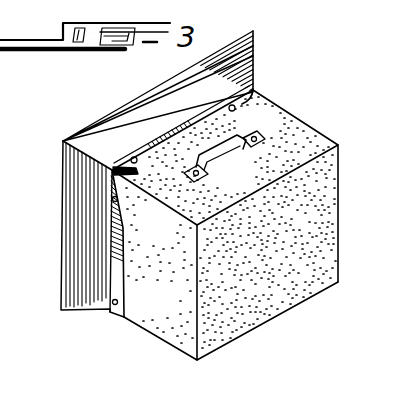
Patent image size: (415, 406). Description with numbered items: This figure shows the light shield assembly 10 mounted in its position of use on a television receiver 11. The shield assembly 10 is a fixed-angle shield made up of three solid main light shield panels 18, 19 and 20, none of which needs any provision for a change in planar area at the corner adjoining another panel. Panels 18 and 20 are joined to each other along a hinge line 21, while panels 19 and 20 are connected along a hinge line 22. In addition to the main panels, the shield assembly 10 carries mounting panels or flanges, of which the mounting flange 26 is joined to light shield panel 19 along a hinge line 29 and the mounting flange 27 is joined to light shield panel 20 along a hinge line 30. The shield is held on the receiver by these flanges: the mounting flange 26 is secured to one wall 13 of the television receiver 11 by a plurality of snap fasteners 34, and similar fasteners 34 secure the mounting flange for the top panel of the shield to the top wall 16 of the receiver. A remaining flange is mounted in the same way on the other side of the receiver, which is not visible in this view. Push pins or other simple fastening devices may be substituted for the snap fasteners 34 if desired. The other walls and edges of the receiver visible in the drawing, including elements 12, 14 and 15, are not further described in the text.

The light shield assembly 10 is at (195, 213).
The television receiver 11 is at (250, 227).
The bottom edge of box 12 is at (188, 360).
The wall 13 is at (162, 318).
The end wall edge 14 is at (340, 182).
The side wall 15 is at (272, 298).
The top wall 16 is at (251, 187).
The light shield panel 18 is at (255, 90).
The light shield panel 19 is at (73, 243).
The light shield panel 20 is at (181, 100).
The hinge line 21 is at (254, 63).
The hinge line 22 is at (78, 139).
The mounting flange 26 is at (117, 280).
The mounting flange 27 is at (208, 122).
The hinge line 29 is at (111, 228).
The hinge line 30 is at (168, 134).
The snap fasteners 34 is at (236, 110).